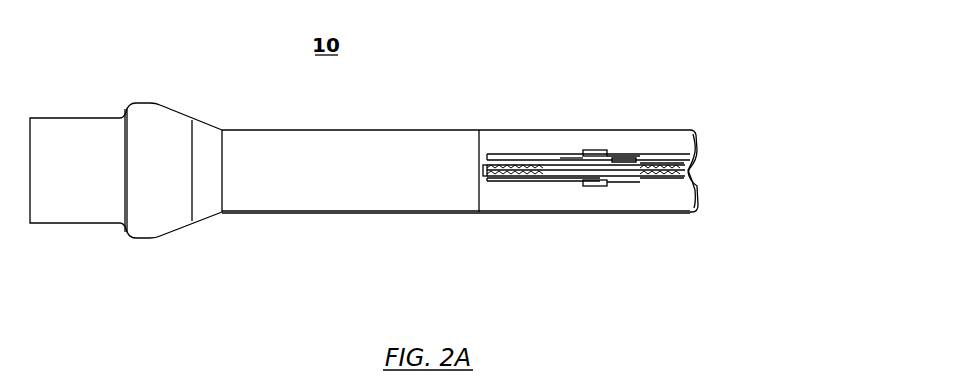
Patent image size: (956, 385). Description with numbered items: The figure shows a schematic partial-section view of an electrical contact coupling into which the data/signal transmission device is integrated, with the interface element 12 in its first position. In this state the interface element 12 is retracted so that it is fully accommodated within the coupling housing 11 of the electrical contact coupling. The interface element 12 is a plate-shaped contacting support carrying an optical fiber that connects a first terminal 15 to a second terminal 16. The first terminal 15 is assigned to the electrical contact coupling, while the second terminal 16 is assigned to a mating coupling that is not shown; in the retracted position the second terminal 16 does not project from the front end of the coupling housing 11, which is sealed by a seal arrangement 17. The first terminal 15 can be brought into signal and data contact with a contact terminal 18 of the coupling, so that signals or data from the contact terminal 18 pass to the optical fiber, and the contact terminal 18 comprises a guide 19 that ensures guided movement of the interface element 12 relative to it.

The coupling housing 11 is at (314, 213).
The interface element 12 is at (556, 164).
The first terminal of interface element 15 is at (507, 166).
The second terminal of interface element 16 is at (661, 172).
The seal arrangement 17 is at (700, 153).
The contact terminal 18 is at (614, 178).
The guide 19 is at (509, 157).